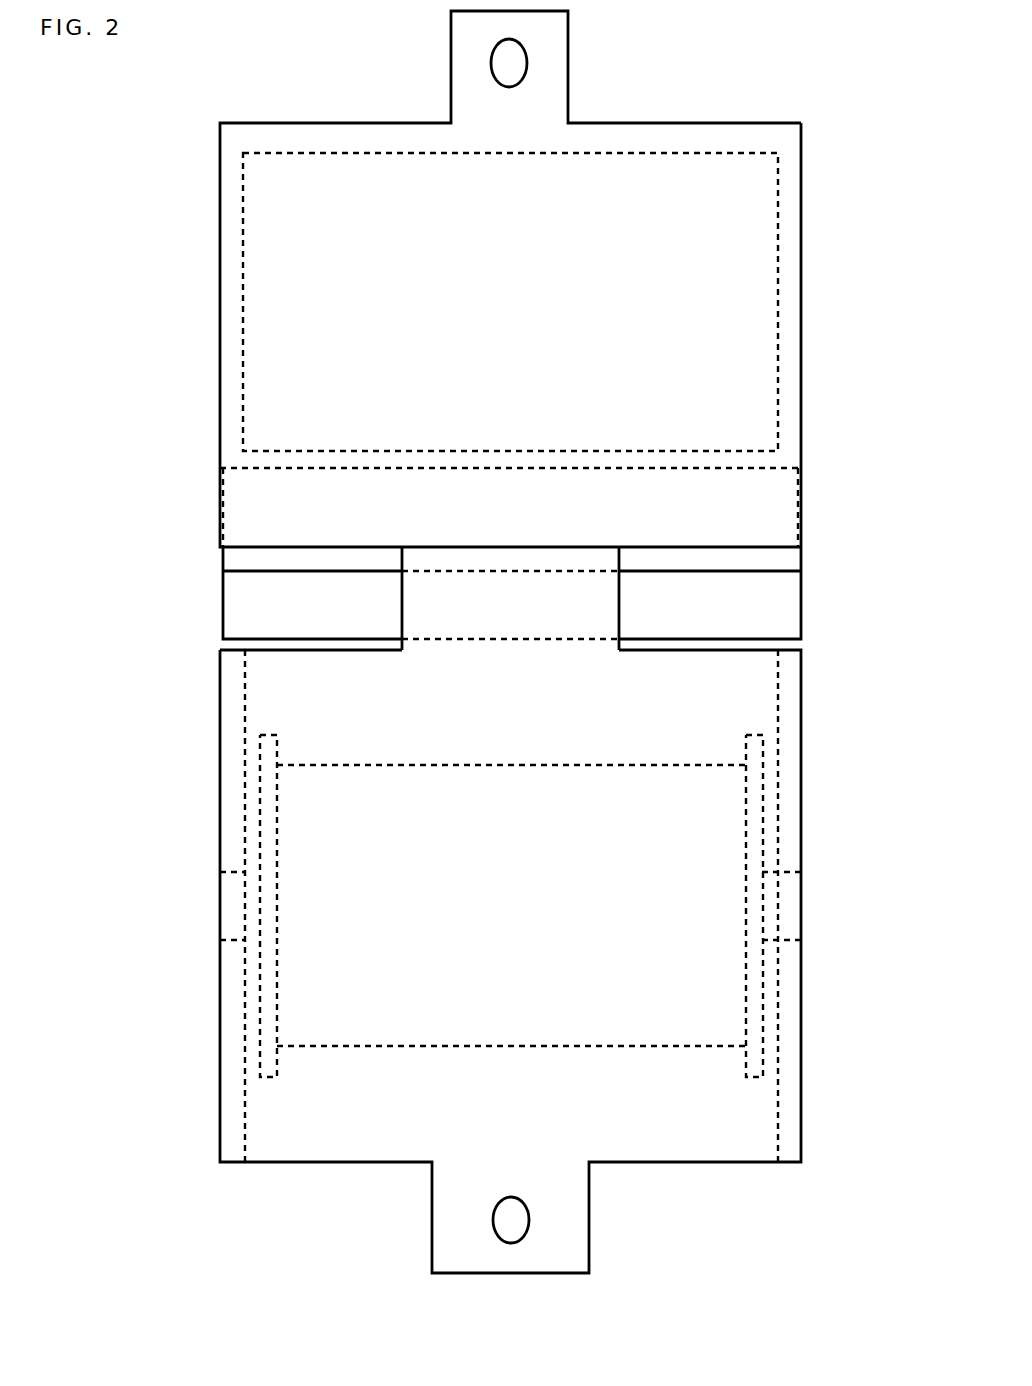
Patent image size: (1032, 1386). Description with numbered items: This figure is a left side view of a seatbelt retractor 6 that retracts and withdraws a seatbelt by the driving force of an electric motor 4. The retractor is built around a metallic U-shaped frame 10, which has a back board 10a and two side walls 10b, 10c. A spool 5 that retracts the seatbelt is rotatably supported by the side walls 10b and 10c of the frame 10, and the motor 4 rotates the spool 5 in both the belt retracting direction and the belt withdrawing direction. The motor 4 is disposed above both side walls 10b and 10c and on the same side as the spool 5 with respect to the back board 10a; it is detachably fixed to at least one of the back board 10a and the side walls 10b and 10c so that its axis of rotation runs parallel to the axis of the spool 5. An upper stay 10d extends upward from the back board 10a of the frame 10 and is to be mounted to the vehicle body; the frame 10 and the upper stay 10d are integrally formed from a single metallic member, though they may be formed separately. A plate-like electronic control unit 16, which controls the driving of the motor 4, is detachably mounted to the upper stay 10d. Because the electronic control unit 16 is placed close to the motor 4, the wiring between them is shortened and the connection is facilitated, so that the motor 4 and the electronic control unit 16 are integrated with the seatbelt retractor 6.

The seatbelt retractor 6 is at (703, 108).
The frame 10 is at (650, 1163).
The back board 10a is at (392, 1118).
The side wall 10b is at (778, 1120).
The side wall 10c is at (245, 1120).
The upper stay 10d is at (792, 332).
The electric motor 4 is at (258, 610).
The spool 5 is at (607, 768).
The electronic control unit 16 is at (240, 318).